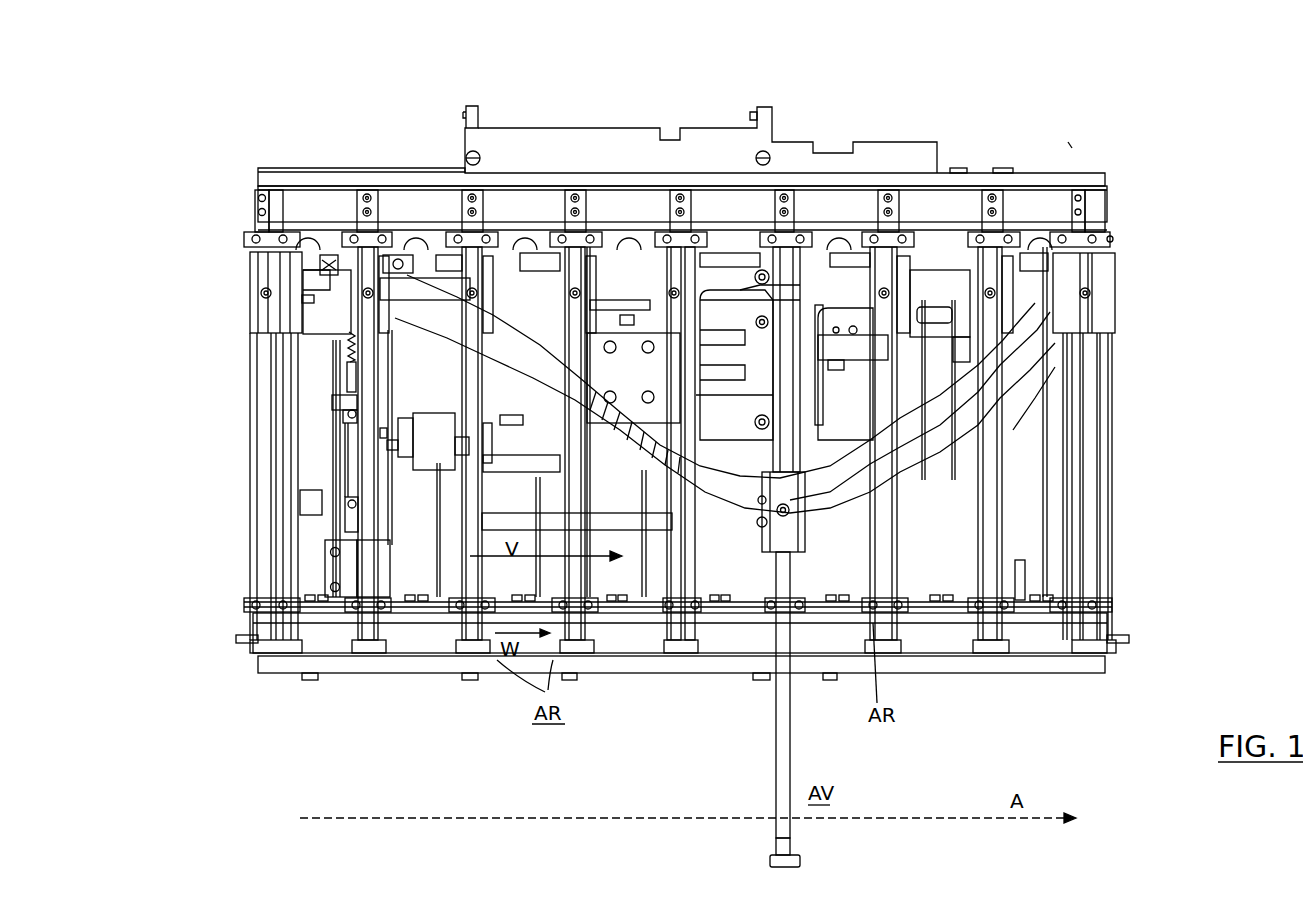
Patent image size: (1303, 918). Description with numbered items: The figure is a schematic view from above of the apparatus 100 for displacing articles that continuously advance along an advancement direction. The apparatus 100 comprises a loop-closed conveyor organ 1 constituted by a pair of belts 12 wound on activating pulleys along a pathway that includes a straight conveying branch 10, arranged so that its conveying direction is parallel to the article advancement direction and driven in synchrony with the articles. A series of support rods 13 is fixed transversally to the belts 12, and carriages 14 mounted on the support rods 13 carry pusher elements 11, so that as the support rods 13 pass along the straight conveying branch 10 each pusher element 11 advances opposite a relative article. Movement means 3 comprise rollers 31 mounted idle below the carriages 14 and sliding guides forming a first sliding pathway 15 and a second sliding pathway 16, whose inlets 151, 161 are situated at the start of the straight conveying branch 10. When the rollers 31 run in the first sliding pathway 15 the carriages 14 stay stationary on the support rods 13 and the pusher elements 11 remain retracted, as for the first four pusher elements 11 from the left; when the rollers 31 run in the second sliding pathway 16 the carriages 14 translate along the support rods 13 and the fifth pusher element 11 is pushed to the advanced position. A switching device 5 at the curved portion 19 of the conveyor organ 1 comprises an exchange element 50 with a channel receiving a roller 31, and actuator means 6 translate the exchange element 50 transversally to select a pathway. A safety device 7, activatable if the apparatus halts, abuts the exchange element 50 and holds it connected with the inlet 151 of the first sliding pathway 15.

The loop-closed conveyor organ 1 is at (1030, 560).
The movement means 3 is at (650, 246).
The switching device 5 is at (343, 270).
The actuator means 6 is at (347, 503).
The safety device 7 is at (348, 460).
The straight conveying branch 10 is at (436, 636).
The pusher elements 11 is at (472, 577).
The belts 12 is at (435, 228).
The support rods 13 is at (790, 295).
The carriages 14 is at (558, 250).
The first sliding pathway 15 is at (514, 256).
The second sliding pathway 16 is at (553, 380).
The curved portion 19 is at (305, 298).
The rollers 31 is at (441, 232).
The exchange element 50 is at (262, 222).
The apparatus for displacing articles 100 is at (1070, 140).
The inlet of the first sliding pathway 151 is at (417, 255).
The inlet of the second sliding pathway 161 is at (413, 293).